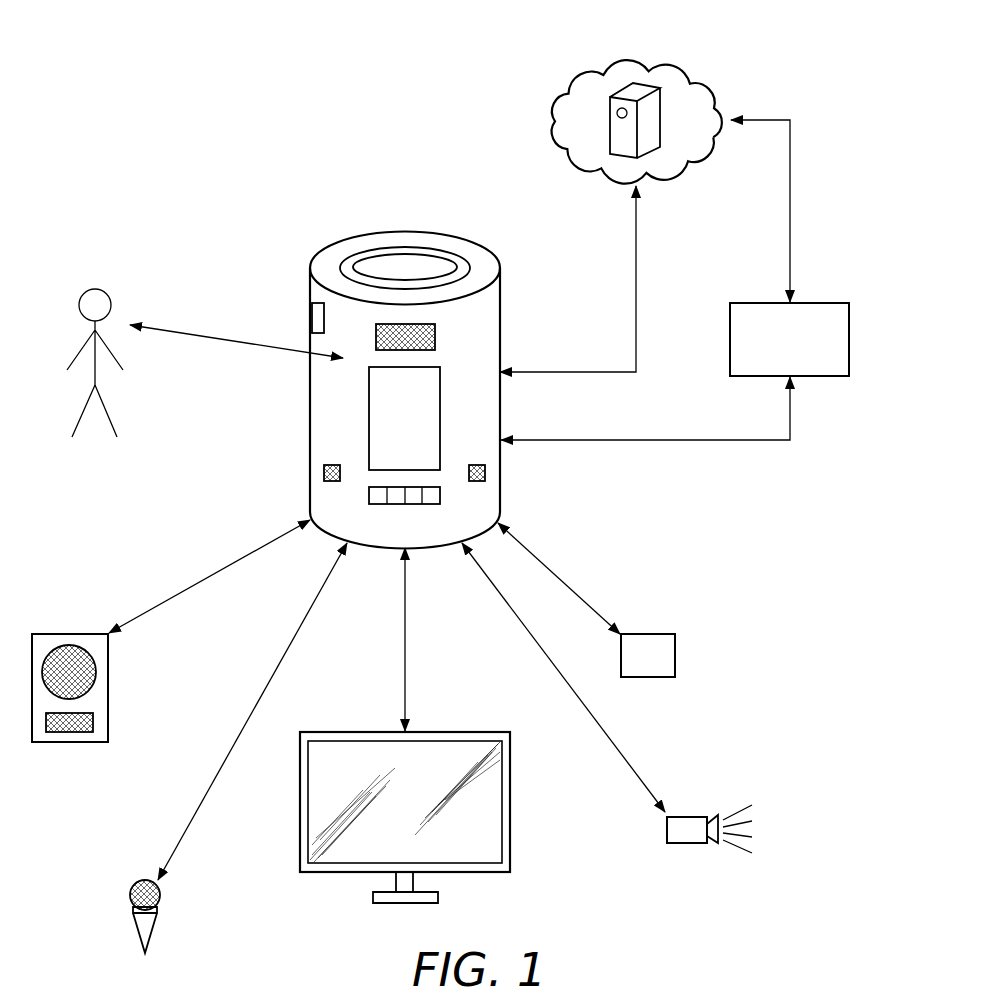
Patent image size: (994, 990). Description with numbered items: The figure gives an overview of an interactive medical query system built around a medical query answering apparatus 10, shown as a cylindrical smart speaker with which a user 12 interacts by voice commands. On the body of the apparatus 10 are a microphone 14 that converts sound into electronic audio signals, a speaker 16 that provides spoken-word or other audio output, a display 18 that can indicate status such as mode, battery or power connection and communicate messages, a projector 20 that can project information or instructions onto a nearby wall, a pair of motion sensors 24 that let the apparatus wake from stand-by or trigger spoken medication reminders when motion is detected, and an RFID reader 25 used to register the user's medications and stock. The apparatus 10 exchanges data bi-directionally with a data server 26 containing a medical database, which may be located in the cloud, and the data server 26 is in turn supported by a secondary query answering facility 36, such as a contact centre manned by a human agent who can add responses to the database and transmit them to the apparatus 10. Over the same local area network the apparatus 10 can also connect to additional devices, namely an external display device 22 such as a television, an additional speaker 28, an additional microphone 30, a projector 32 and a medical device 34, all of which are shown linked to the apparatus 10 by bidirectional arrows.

The medical query answering apparatus 10 is at (403, 232).
The user 12 is at (95, 289).
The microphone 14 is at (436, 335).
The speaker 16 is at (440, 262).
The display 18 is at (369, 396).
The projector 20 is at (310, 314).
The external display device 22 is at (512, 745).
The motion sensor 24 is at (324, 472).
The RFID reader 25 is at (380, 504).
The data server 26 is at (645, 85).
The additional speaker 28 is at (83, 742).
The additional microphone 30 is at (159, 928).
The projector 32 is at (687, 845).
The medical device 34 is at (676, 648).
The secondary query answering facility 36 is at (850, 318).